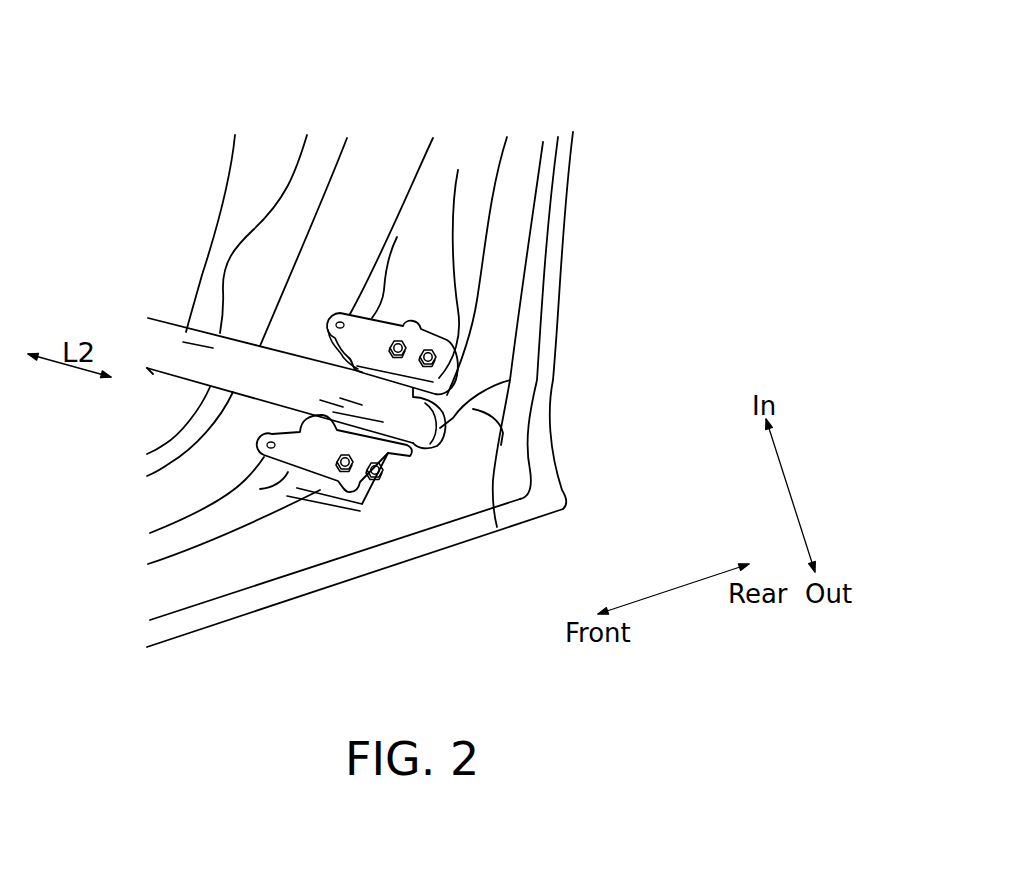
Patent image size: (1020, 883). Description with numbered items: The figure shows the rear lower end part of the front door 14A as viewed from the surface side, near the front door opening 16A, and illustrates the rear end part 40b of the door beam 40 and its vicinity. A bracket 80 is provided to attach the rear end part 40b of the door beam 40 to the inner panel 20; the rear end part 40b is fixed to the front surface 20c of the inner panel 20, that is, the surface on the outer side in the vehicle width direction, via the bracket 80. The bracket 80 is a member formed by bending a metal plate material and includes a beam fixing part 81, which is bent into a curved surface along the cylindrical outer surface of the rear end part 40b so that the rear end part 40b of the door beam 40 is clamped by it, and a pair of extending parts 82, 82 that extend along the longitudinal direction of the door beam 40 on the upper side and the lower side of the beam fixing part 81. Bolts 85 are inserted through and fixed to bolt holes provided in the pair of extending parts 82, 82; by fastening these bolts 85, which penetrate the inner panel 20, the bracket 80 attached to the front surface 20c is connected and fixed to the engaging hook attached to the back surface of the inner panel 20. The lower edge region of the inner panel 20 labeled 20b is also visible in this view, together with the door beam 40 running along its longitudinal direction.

The inner panel 20 is at (270, 153).
The front surface of the inner panel 20c is at (317, 160).
The door panel lower flange 20b is at (497, 527).
The front door opening 16A is at (383, 173).
The front door 14A is at (573, 172).
The door beam 40 is at (266, 472).
The rear end part of the door beam 40b is at (437, 448).
The bracket 80 is at (362, 372).
The beam fixing part 81 is at (510, 380).
The extending part 82 is at (393, 327).
The bolt 85 is at (405, 347).